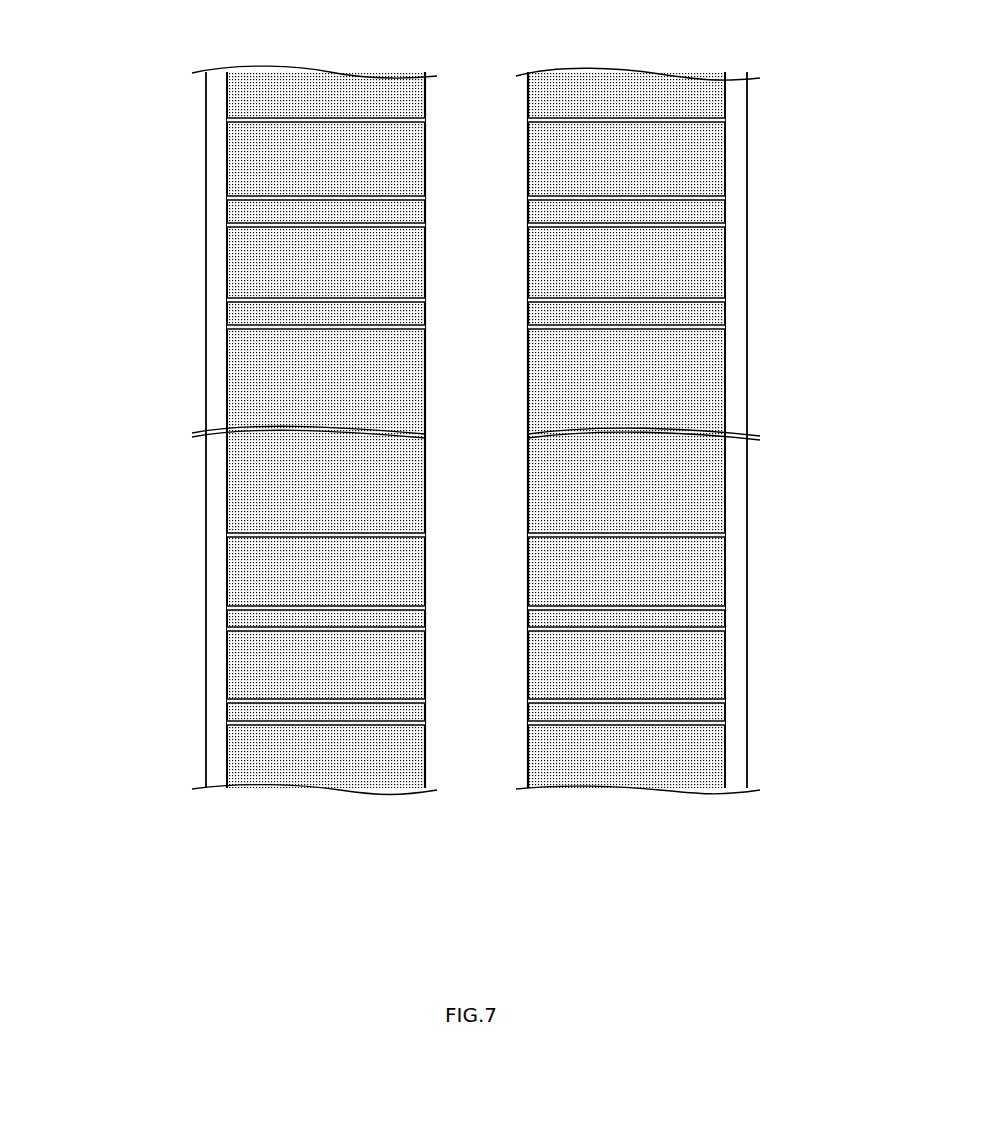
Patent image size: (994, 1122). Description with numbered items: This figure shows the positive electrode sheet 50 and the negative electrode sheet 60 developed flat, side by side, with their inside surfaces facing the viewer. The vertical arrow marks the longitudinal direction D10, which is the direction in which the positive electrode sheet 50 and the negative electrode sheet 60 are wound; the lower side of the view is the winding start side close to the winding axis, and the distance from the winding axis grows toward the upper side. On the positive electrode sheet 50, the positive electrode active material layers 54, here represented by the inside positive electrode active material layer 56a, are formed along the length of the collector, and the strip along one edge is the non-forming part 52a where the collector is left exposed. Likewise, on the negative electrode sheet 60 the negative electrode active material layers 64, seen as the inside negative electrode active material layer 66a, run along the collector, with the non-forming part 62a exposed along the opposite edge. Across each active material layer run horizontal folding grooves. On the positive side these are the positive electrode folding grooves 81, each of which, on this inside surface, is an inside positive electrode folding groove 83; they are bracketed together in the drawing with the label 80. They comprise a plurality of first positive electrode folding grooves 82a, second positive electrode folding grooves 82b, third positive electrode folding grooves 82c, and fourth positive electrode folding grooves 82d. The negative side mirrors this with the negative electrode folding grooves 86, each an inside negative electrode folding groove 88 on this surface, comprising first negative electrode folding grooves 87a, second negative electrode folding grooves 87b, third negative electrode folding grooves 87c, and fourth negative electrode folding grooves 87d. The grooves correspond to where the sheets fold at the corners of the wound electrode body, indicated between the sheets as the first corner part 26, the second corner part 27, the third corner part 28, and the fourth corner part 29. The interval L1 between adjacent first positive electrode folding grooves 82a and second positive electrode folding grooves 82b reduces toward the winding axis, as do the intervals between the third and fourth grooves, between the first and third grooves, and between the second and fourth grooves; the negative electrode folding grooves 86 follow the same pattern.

The positive electrode sheet 50 is at (292, 452).
The negative electrode sheet 60 is at (670, 452).
The positive electrode active material layers 54 is at (326, 401).
The inside positive electrode active material layer 56a is at (317, 82).
The negative electrode active material layers 64 is at (626, 401).
The inside negative electrode active material layer 66a is at (607, 82).
The non-forming part 52a is at (227, 388).
The non-forming part 62a is at (747, 388).
The groove group 80 is at (474, 432).
The positive electrode folding grooves 81 is at (230, 432).
The inside positive electrode folding groove 83 is at (143, 112).
The negative electrode folding grooves 86 is at (720, 432).
The inside negative electrode folding groove 88 is at (805, 348).
The first positive electrode folding groove 82a is at (227, 198).
The second positive electrode folding groove 82b is at (227, 225).
The third positive electrode folding groove 82c is at (227, 120).
The fourth positive electrode folding groove 82d is at (227, 300).
The first negative electrode folding groove 87a is at (725, 198).
The second negative electrode folding groove 87b is at (725, 225).
The third negative electrode folding groove 87c is at (725, 120).
The fourth negative electrode folding groove 87d is at (725, 300).
The third corner part 28 is at (513, 120).
The first corner part 26 is at (513, 198).
The second corner part 27 is at (513, 225).
The fourth corner part 29 is at (513, 305).
The interval L1 is at (425, 198).
The longitudinal direction D10 is at (85, 404).